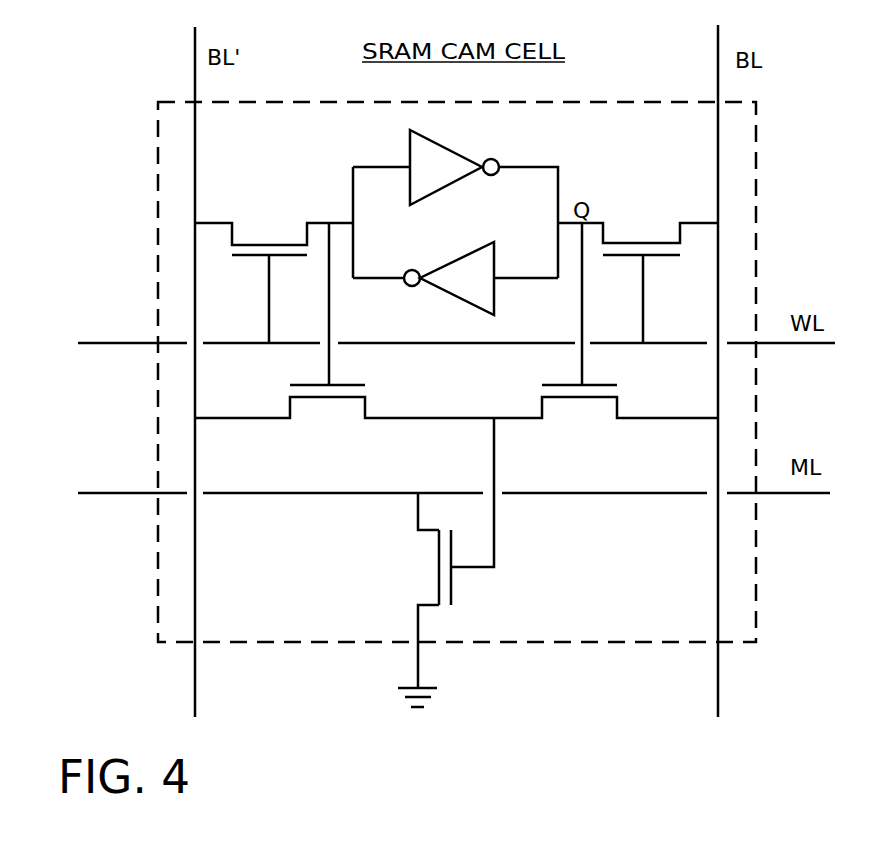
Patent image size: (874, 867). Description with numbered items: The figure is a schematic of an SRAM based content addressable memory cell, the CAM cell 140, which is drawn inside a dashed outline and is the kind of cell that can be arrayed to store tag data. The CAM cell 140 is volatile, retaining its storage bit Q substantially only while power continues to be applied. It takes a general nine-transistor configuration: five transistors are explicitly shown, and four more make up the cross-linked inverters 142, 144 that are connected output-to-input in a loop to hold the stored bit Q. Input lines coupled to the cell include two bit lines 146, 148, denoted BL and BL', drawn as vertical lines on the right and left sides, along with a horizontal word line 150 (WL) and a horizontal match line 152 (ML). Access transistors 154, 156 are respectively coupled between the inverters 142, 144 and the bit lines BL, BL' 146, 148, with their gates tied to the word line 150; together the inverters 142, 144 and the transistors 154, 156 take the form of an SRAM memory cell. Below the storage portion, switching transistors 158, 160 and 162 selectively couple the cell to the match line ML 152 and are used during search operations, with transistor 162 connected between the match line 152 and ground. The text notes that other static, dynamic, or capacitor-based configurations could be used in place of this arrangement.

The CAM cell 140 is at (95, 82).
The inverter 142 is at (410, 142).
The inverter 144 is at (463, 256).
The bit line 146 is at (718, 72).
The bit line 148 is at (195, 76).
The word line 150 is at (797, 345).
The match line 152 is at (797, 495).
The access transistor 154 is at (257, 257).
The access transistor 156 is at (628, 257).
The switching transistor 158 is at (310, 399).
The switching transistor 160 is at (561, 399).
The switching transistor 162 is at (439, 588).